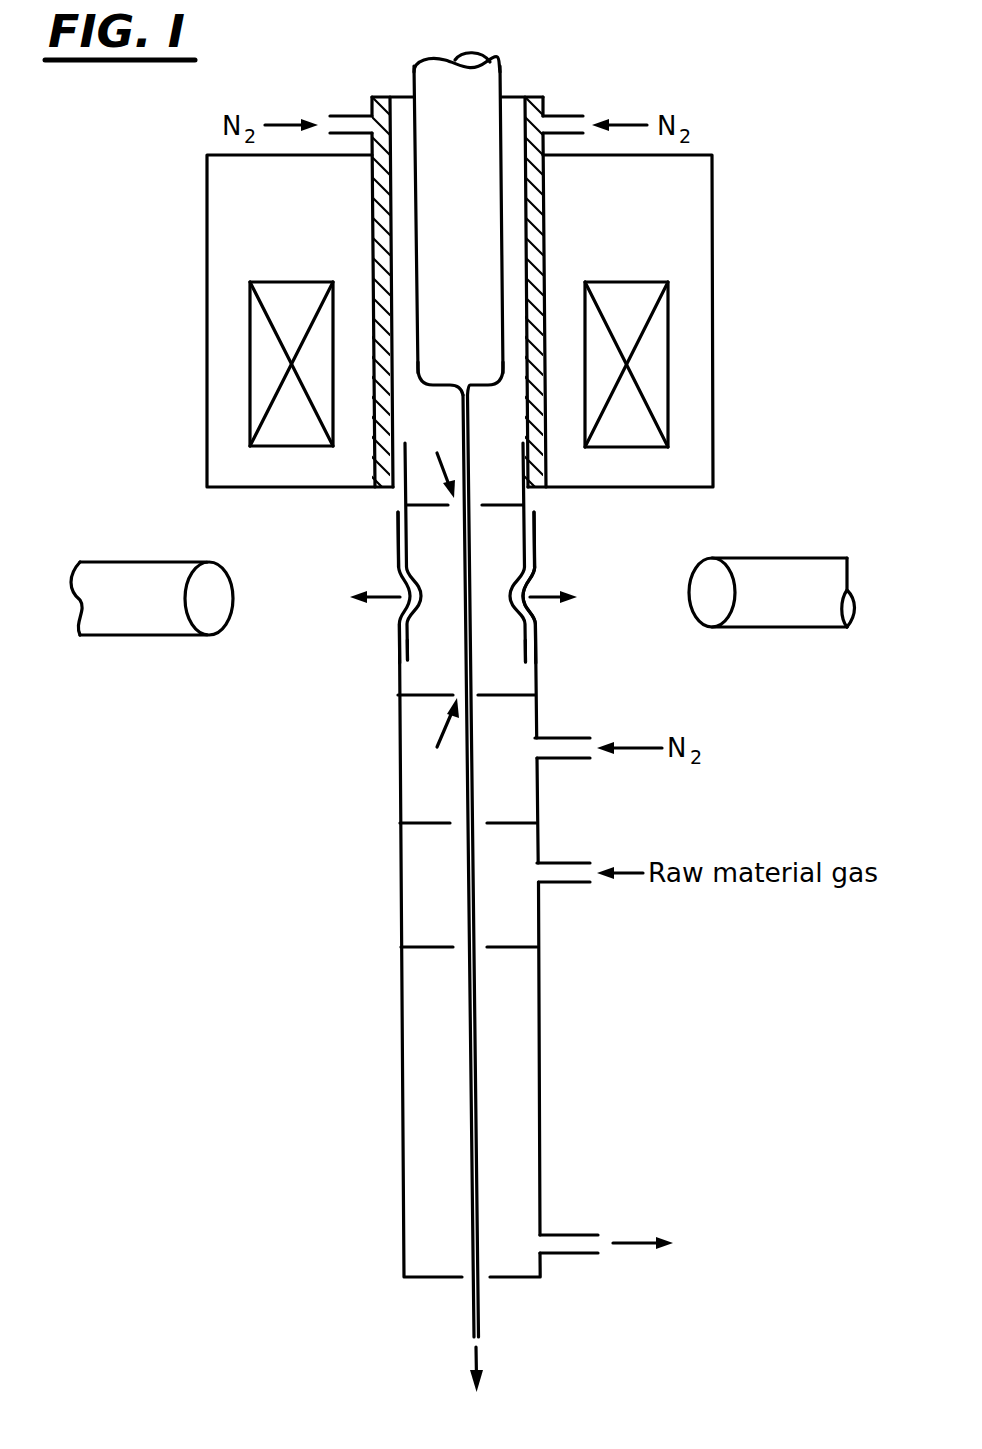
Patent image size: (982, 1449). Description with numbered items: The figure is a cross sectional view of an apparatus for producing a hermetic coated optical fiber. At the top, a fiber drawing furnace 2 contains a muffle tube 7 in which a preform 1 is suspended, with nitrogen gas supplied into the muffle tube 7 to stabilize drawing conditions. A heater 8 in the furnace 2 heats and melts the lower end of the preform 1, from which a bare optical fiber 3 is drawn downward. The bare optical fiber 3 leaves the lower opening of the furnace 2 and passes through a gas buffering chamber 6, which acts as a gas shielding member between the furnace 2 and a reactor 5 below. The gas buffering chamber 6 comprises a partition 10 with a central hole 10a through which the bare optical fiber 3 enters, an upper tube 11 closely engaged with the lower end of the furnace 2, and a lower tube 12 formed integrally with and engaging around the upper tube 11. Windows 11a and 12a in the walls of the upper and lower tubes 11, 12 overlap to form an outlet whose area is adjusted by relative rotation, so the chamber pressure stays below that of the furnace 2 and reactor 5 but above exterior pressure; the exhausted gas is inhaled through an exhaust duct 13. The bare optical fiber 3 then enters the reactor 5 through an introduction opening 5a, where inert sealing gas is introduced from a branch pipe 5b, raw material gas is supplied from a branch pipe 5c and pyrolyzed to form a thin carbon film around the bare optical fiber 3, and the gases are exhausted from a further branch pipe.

The preform 1 is at (488, 90).
The fiber drawing furnace 2 is at (678, 240).
The bare optical fiber 3 is at (530, 497).
The reactor 5 is at (398, 787).
The introduction opening 5a is at (477, 695).
The branch pipe 5b is at (563, 760).
The branch pipe 5c is at (570, 882).
The gas buffering chamber 6 is at (432, 640).
The muffle tube 7 is at (535, 212).
The heater 8 is at (268, 388).
The partition 10 is at (432, 512).
The hole 10a is at (473, 503).
The upper tube 11 is at (410, 503).
The window 11a is at (530, 587).
The lower tube 12 is at (398, 632).
The window 12a is at (533, 617).
The exhaust duct 13 is at (157, 583).